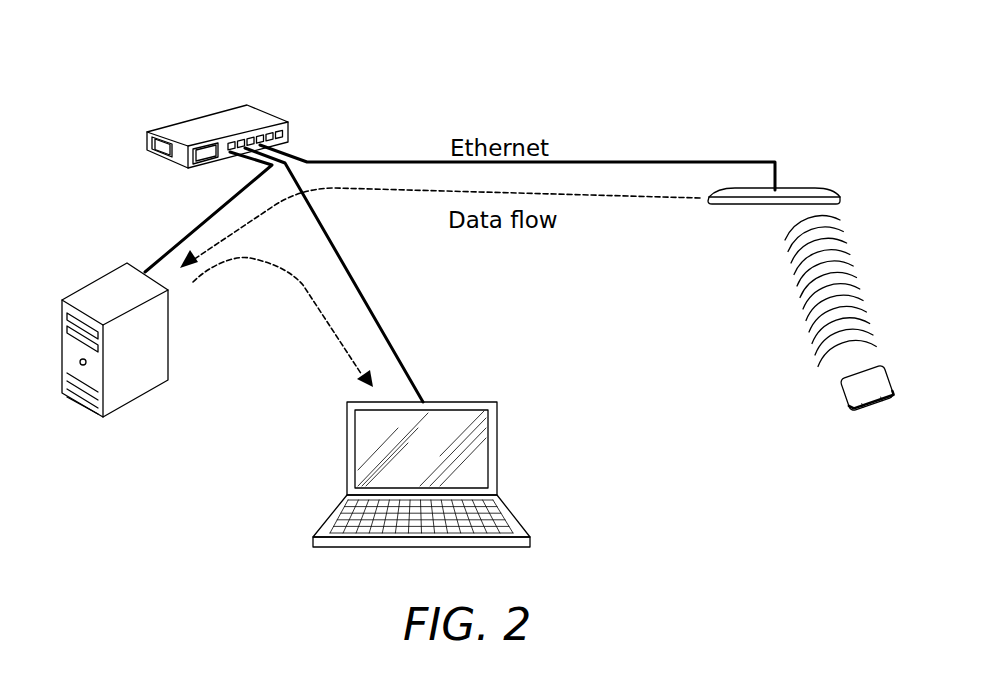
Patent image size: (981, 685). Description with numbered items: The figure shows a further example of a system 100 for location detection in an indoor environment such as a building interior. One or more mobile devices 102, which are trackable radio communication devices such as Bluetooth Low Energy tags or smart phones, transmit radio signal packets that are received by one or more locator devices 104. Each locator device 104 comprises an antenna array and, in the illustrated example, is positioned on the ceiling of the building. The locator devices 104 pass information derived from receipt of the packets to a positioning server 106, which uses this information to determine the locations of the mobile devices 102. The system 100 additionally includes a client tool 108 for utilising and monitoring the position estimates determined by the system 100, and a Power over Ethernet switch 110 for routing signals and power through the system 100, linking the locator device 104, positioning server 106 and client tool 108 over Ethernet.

The system 100 is at (697, 82).
The mobile device 102 is at (833, 390).
The locator device 104 is at (730, 204).
The positioning server 106 is at (95, 280).
The client tool 108 is at (497, 413).
The Power over Ethernet switch 110 is at (147, 140).